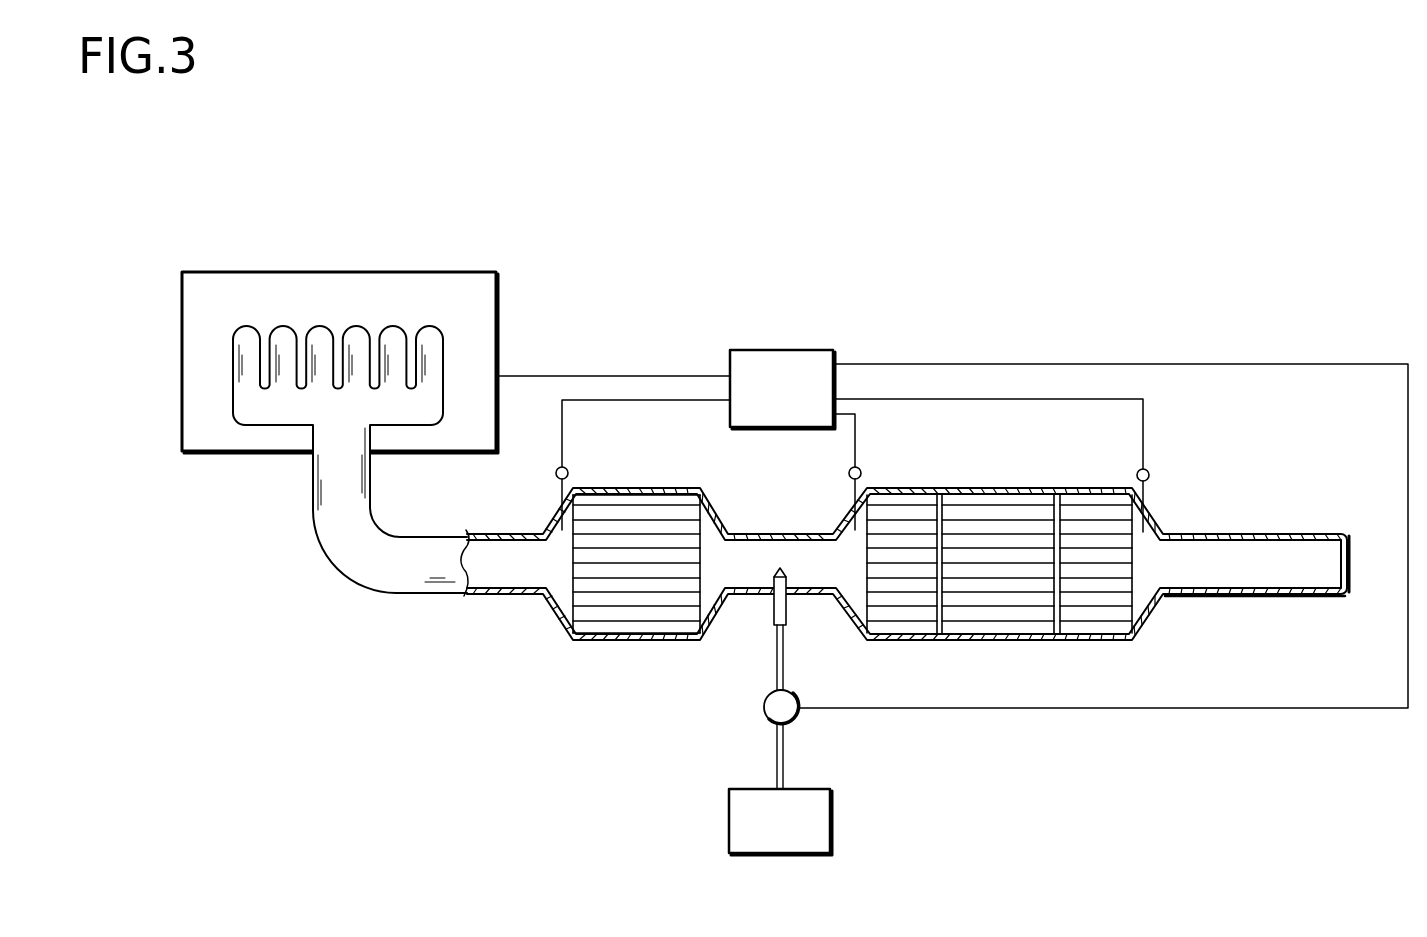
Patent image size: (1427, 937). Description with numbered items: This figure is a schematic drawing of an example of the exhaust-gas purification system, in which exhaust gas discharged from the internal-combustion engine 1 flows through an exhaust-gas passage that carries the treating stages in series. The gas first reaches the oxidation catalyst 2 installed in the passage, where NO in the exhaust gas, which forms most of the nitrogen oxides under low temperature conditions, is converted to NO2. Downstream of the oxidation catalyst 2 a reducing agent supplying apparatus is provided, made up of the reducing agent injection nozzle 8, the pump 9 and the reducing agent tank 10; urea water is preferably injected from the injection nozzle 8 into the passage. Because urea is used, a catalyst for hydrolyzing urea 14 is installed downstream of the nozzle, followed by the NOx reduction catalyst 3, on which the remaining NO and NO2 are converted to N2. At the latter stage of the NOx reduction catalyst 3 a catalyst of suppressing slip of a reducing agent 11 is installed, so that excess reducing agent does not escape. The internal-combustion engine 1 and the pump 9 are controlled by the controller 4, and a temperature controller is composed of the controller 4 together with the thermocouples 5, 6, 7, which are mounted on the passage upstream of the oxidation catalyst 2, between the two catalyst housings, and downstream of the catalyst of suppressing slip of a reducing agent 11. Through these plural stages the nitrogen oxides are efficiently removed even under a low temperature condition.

The internal-combustion engine 1 is at (468, 272).
The oxidation catalyst 2 is at (642, 636).
The NOx reduction catalyst 3 is at (999, 595).
The controller 4 is at (812, 350).
The thermocouple 5 is at (556, 472).
The thermocouple 6 is at (849, 473).
The thermocouple 7 is at (1137, 475).
The reducing agent injection nozzle 8 is at (772, 608).
The pump 9 is at (764, 708).
The reducing agent tank 10 is at (729, 822).
The catalyst of suppressing slip of a reducing agent 11 is at (1090, 634).
The catalyst for hydrolyzing urea 14 is at (905, 634).